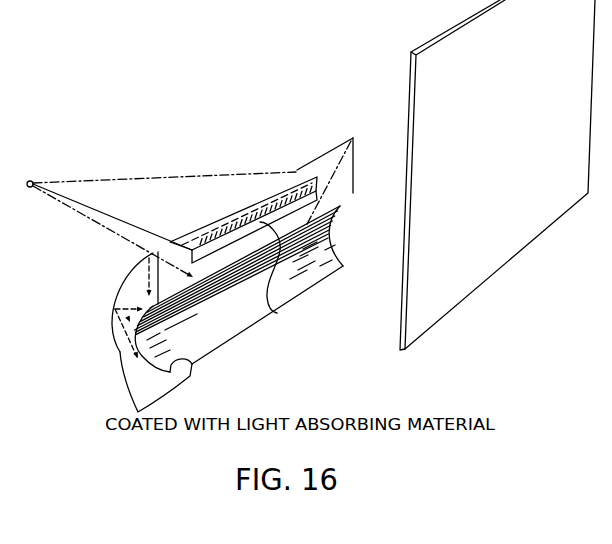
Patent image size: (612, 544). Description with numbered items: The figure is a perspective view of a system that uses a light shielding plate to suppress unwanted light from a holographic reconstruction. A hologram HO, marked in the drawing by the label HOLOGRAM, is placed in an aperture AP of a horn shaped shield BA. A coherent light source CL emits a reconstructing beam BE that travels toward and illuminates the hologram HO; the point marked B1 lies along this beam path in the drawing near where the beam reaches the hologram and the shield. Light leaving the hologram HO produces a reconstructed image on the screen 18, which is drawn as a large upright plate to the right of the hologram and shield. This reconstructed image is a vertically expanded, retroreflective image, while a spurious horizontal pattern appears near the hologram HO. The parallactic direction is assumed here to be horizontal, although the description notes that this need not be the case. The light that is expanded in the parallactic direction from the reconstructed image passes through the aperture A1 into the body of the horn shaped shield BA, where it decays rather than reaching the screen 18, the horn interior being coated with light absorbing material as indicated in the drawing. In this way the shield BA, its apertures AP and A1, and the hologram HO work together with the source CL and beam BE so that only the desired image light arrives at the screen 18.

The screen 18 is at (447, 308).
The coherent light source CL is at (26, 174).
The reconstructing beam BE is at (88, 210).
The beam point B1 is at (158, 252).
The hologram HOLOGRAM is at (233, 230).
The aperture AP is at (289, 184).
The aperture A1 is at (347, 160).
The horn shaped shield BA is at (347, 192).
The hologram HO is at (277, 313).